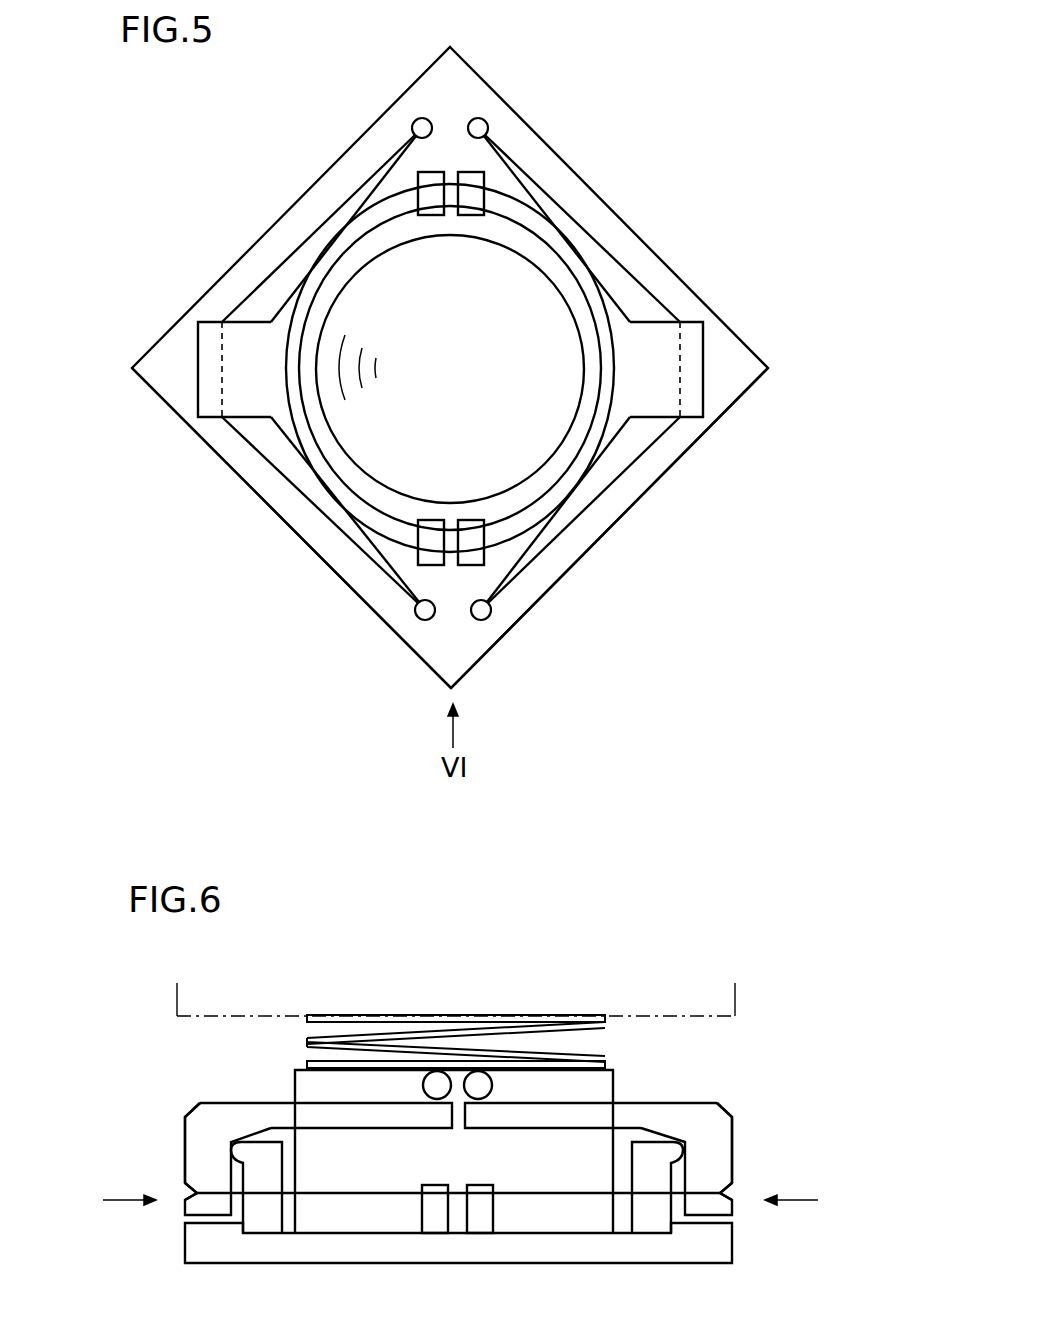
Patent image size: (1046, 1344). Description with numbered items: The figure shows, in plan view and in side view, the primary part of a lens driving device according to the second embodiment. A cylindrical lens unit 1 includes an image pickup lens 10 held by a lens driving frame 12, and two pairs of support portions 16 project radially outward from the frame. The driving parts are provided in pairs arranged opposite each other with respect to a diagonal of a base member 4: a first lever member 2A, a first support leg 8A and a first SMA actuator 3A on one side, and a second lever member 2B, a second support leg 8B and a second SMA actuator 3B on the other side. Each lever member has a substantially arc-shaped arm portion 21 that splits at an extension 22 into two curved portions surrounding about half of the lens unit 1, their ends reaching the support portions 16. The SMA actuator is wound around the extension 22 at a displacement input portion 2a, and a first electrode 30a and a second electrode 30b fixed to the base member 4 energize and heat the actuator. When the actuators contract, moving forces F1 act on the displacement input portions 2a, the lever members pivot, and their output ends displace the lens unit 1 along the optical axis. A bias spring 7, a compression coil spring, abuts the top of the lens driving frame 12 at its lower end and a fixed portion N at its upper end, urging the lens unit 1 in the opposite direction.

In FIG. 5, the lens unit 1 is at (506, 362).
In FIG. 6, the lens unit 1 is at (606, 1092).
In FIG. 5, the image pickup lens 10 is at (532, 315).
In FIG. 5, the lens driving frame 12 is at (548, 253).
In FIG. 5, the support portions 16 is at (424, 192).
In FIG. 6, the support portions 16 is at (479, 1078).
In FIG. 5, the base member 4 is at (362, 155).
In FIG. 6, the base member 4 is at (712, 1243).
In FIG. 5, the first electrode 30a is at (422, 118).
In FIG. 5, the second electrode 30b is at (425, 621).
In FIG. 5, the first lever member 2A is at (170, 490).
In FIG. 6, the first lever member 2A is at (118, 1100).
In FIG. 5, the second lever member 2B is at (729, 462).
In FIG. 6, the second lever member 2B is at (798, 1100).
In FIG. 5, the arm portion 21 is at (300, 483).
In FIG. 6, the arm portion 21 is at (310, 1120).
In FIG. 5, the extension 22 is at (248, 403).
In FIG. 6, the extension 22 is at (207, 1160).
In FIG. 6, the displacement input portion 2a is at (185, 1197).
In FIG. 5, the first SMA actuator 3A is at (322, 560).
In FIG. 6, the first SMA actuator 3A is at (352, 1195).
In FIG. 5, the second SMA actuator 3B is at (608, 540).
In FIG. 6, the second SMA actuator 3B is at (540, 1195).
In FIG. 6, the bias spring 7 is at (342, 1014).
In FIG. 6, the first support leg 8A is at (258, 1213).
In FIG. 6, the second support leg 8B is at (655, 1213).
In FIG. 6, the fixed portion N is at (245, 1022).
In FIG. 6, the moving force F1 is at (461, 1200).